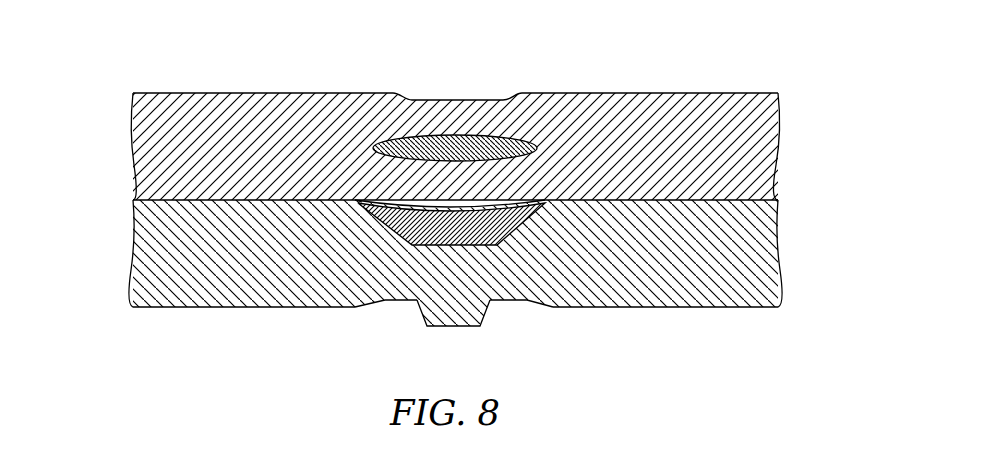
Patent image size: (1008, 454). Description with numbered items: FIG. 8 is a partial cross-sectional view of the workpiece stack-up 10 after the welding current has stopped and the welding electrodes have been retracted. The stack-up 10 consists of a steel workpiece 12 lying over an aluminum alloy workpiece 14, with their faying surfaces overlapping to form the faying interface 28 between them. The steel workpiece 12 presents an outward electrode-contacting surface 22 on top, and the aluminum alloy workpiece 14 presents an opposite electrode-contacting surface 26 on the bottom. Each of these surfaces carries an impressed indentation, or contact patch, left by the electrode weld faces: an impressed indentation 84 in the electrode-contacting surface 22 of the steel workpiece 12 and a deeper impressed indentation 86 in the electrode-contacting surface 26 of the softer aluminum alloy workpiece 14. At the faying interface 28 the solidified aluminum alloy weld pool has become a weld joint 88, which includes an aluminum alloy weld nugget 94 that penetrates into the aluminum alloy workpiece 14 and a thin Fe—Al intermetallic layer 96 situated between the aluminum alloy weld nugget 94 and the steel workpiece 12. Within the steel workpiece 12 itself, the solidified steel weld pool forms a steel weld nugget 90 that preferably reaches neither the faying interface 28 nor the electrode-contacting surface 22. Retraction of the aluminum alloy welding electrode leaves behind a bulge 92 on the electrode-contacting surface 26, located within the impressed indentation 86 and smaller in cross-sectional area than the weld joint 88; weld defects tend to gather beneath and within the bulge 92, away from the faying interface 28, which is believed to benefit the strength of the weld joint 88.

The workpiece stack-up 10 is at (122, 130).
The steel workpiece 12 is at (757, 158).
The aluminum alloy workpiece 14 is at (757, 232).
The electrode-contacting surface 22 is at (210, 93).
The electrode-contacting surface 26 is at (180, 307).
The faying interface 28 is at (190, 200).
The impressed indentation 84 is at (418, 100).
The impressed indentation 86 is at (397, 300).
The weld joint 88 is at (352, 190).
The steel weld nugget 90 is at (484, 146).
The bulge 92 is at (490, 312).
The aluminum alloy weld nugget 94 is at (497, 228).
The Fe—Al intermetallic layer 96 is at (542, 200).